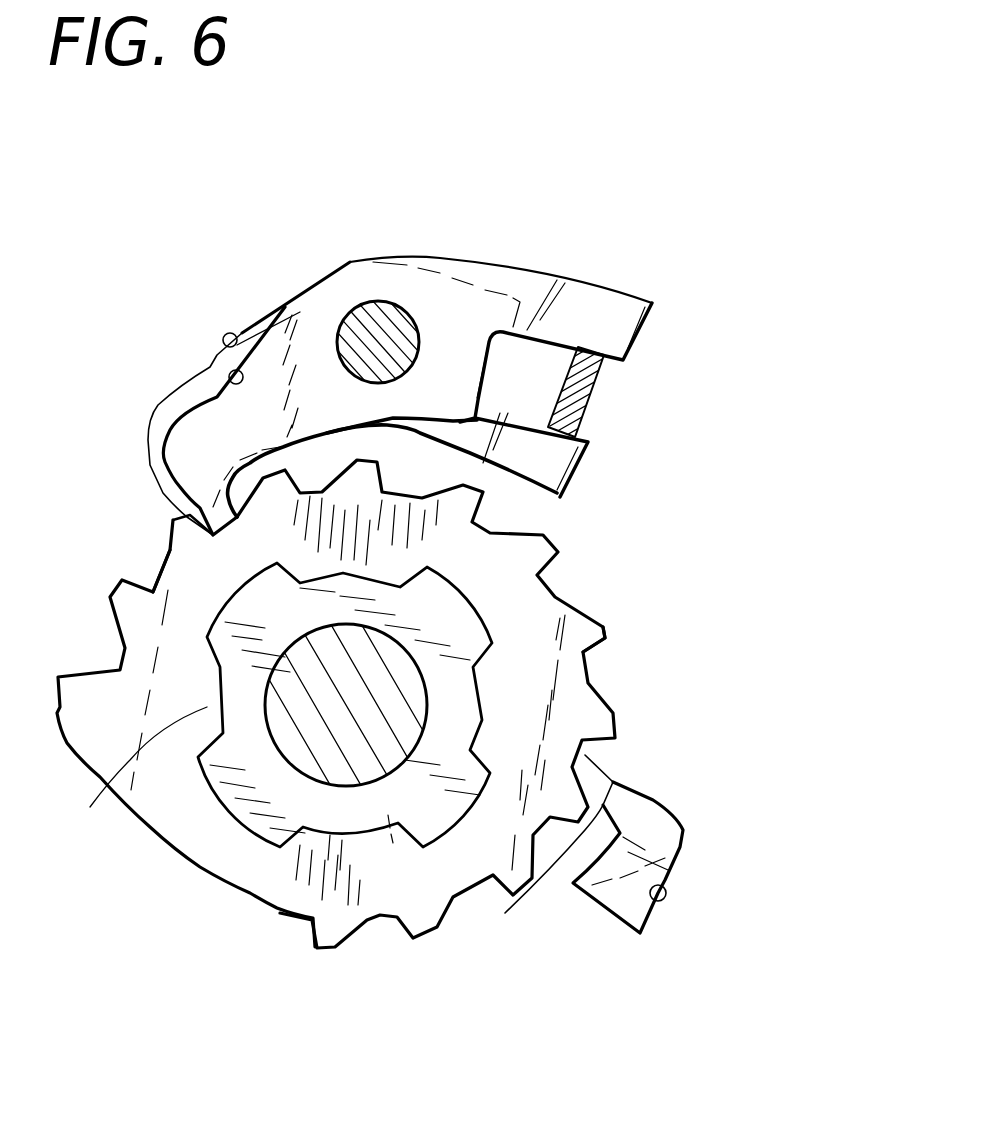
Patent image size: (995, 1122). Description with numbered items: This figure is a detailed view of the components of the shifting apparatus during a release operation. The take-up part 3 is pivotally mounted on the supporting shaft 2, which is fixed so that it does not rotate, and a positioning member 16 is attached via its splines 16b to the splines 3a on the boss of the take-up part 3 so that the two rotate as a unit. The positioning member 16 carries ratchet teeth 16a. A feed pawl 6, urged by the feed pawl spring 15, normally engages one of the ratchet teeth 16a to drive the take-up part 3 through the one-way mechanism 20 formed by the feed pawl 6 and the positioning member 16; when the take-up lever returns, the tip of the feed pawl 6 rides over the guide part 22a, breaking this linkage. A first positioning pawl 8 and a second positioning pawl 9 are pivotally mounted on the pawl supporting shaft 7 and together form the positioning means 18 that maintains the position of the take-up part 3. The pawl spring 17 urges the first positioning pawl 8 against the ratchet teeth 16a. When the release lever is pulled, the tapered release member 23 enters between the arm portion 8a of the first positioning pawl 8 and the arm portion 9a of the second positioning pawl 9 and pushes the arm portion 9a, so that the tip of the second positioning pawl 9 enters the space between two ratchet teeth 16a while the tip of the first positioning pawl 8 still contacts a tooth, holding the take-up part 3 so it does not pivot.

The supporting shaft 2 is at (410, 680).
The take-up part 3 is at (363, 820).
The splines 3a is at (250, 805).
The feed pawl 6 is at (611, 910).
The pawl supporting shaft 7 is at (370, 337).
The first positioning pawl 8 is at (157, 482).
The arm portion 8a is at (590, 465).
The second positioning pawl 9 is at (210, 440).
The arm portion 9a is at (643, 332).
The feed pawl spring 15 is at (667, 893).
The positioning member 16 is at (187, 820).
The ratchet teeth 16a is at (170, 548).
The splines 16b is at (117, 774).
The pawl spring 17 is at (226, 333).
The positioning means 18 is at (155, 519).
The one-way mechanism 20 is at (655, 785).
The guide part 22a is at (616, 780).
The tapered release member 23 is at (600, 393).